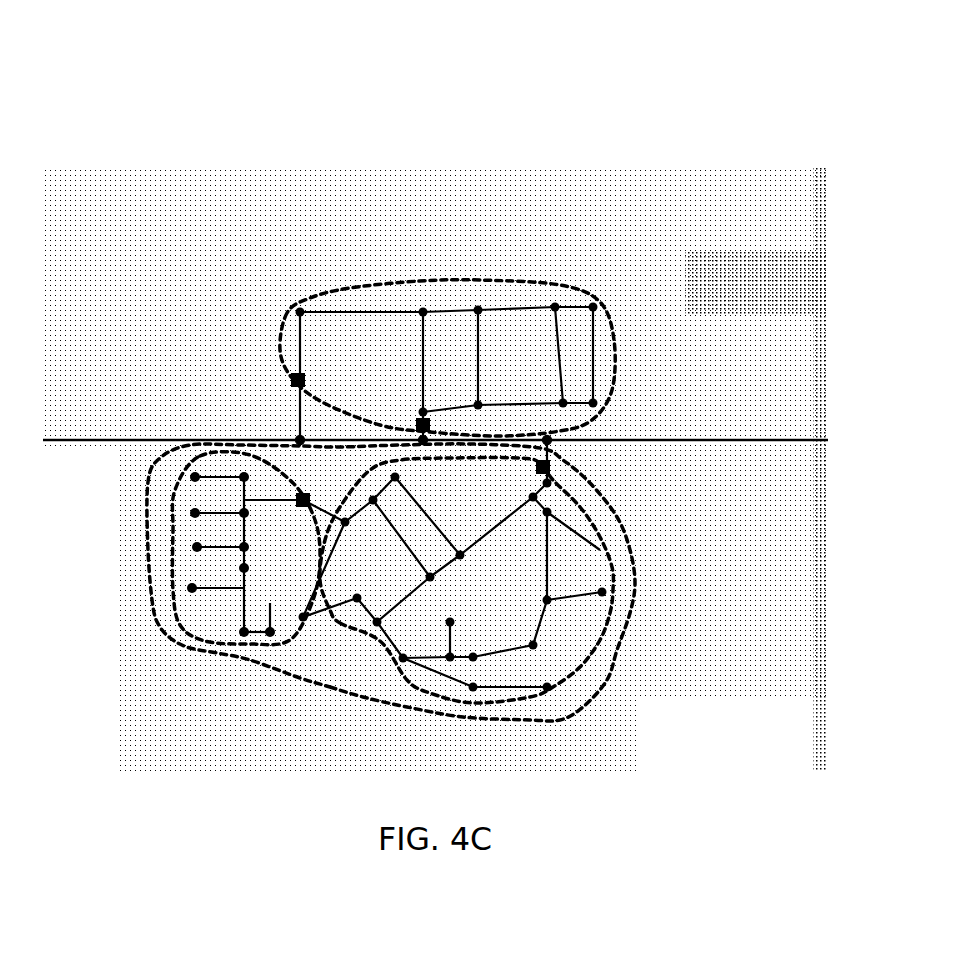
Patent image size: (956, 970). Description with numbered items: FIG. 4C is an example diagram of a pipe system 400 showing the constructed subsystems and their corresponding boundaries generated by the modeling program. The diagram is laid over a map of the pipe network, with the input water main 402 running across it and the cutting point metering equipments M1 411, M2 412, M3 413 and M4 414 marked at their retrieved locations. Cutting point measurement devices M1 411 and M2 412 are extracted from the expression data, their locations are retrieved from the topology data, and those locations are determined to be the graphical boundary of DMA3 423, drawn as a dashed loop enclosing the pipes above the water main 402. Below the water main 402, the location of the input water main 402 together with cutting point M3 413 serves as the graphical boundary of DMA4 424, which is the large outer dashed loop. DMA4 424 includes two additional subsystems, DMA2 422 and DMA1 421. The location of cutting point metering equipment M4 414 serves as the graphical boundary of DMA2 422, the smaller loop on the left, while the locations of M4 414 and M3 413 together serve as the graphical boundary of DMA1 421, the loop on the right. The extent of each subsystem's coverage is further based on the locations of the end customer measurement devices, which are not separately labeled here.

The water distribution network map with district metered areas 400 is at (670, 132).
The water main 402 is at (652, 438).
The cutting point metering equipment M1 411 is at (291, 380).
The cutting point metering equipment M2 412 is at (416, 425).
The cutting point metering equipment M3 413 is at (536, 467).
The cutting point metering equipment M4 414 is at (303, 508).
The DMA1 421 is at (624, 563).
The DMA2 422 is at (173, 545).
The DMA3 423 is at (390, 282).
The DMA4 424 is at (266, 671).